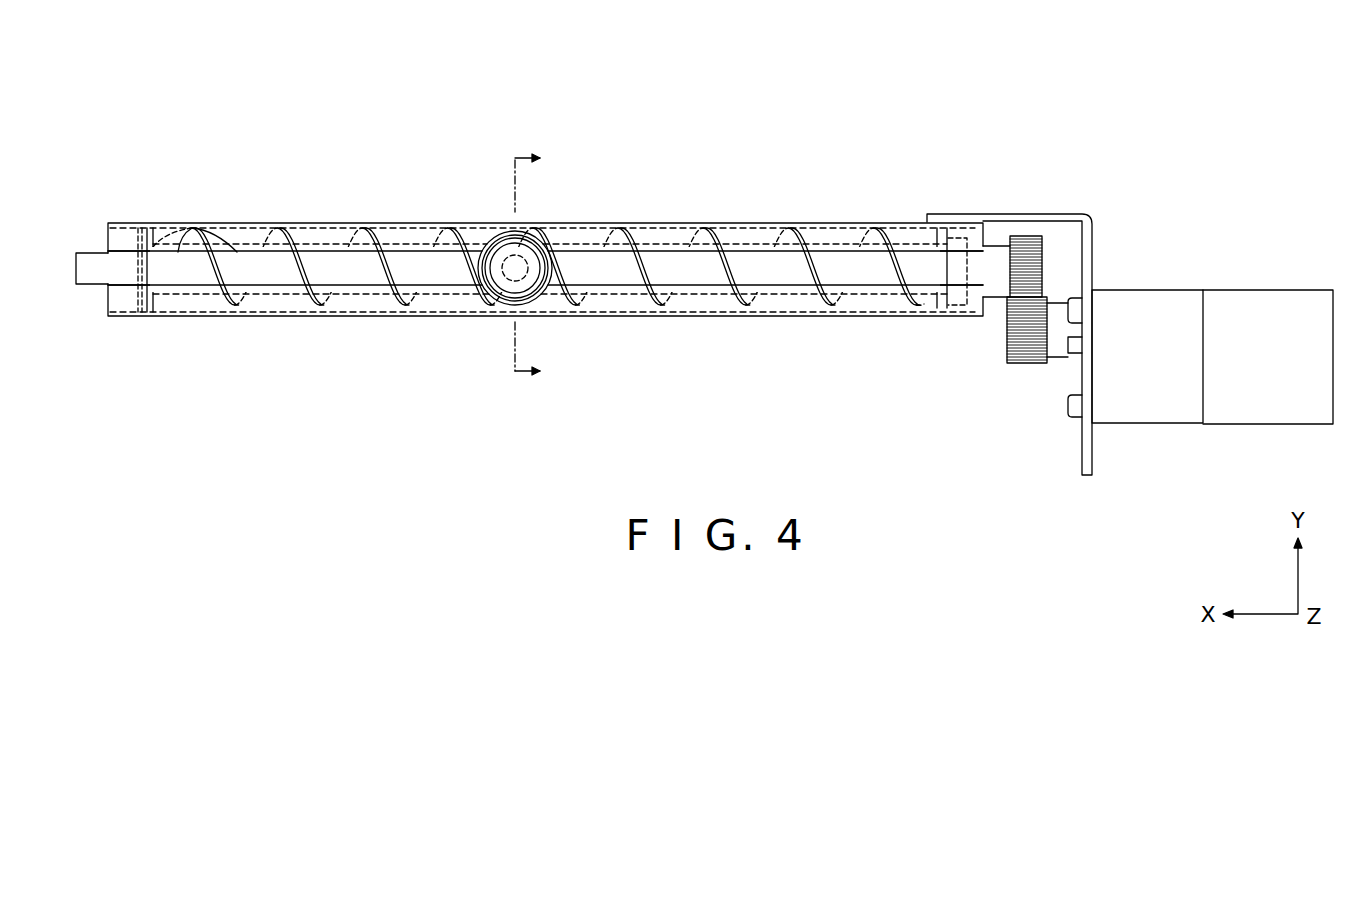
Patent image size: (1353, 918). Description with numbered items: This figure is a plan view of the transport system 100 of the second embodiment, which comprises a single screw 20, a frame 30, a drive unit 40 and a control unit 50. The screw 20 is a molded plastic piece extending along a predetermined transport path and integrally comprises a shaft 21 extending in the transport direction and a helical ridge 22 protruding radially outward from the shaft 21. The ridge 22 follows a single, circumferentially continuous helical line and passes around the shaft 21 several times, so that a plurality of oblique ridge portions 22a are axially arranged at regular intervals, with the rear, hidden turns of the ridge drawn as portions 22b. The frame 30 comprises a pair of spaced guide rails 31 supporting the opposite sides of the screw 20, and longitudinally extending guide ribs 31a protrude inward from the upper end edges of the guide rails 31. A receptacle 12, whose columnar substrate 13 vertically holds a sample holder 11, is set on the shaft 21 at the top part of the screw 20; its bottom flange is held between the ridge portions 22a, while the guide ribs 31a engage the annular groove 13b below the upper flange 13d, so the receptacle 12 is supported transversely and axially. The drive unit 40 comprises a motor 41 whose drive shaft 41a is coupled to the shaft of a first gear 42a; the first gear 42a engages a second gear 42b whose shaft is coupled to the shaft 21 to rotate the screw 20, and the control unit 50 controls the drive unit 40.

The transport system 100 is at (1007, 124).
The sample holder 11 is at (540, 268).
The receptacle 12 is at (537, 298).
The substrate 13 is at (518, 240).
The annular groove 13b is at (550, 242).
The flange 13d is at (497, 238).
The screw 20 is at (543, 269).
The shaft 21 is at (835, 243).
The helical ridge 22 is at (545, 269).
The oblique ridge portions 22a is at (397, 267).
The blade rear portion 22b is at (907, 317).
The frame 30 is at (337, 317).
The guide rails 31 is at (385, 229).
The guide ribs 31a is at (330, 244).
The drive unit 40 is at (1212, 318).
The motor 41 is at (1180, 292).
The drive shaft 41a is at (1075, 342).
The first gear 42a is at (1025, 352).
The second gear 42b is at (1027, 240).
The control unit 50 is at (1265, 290).